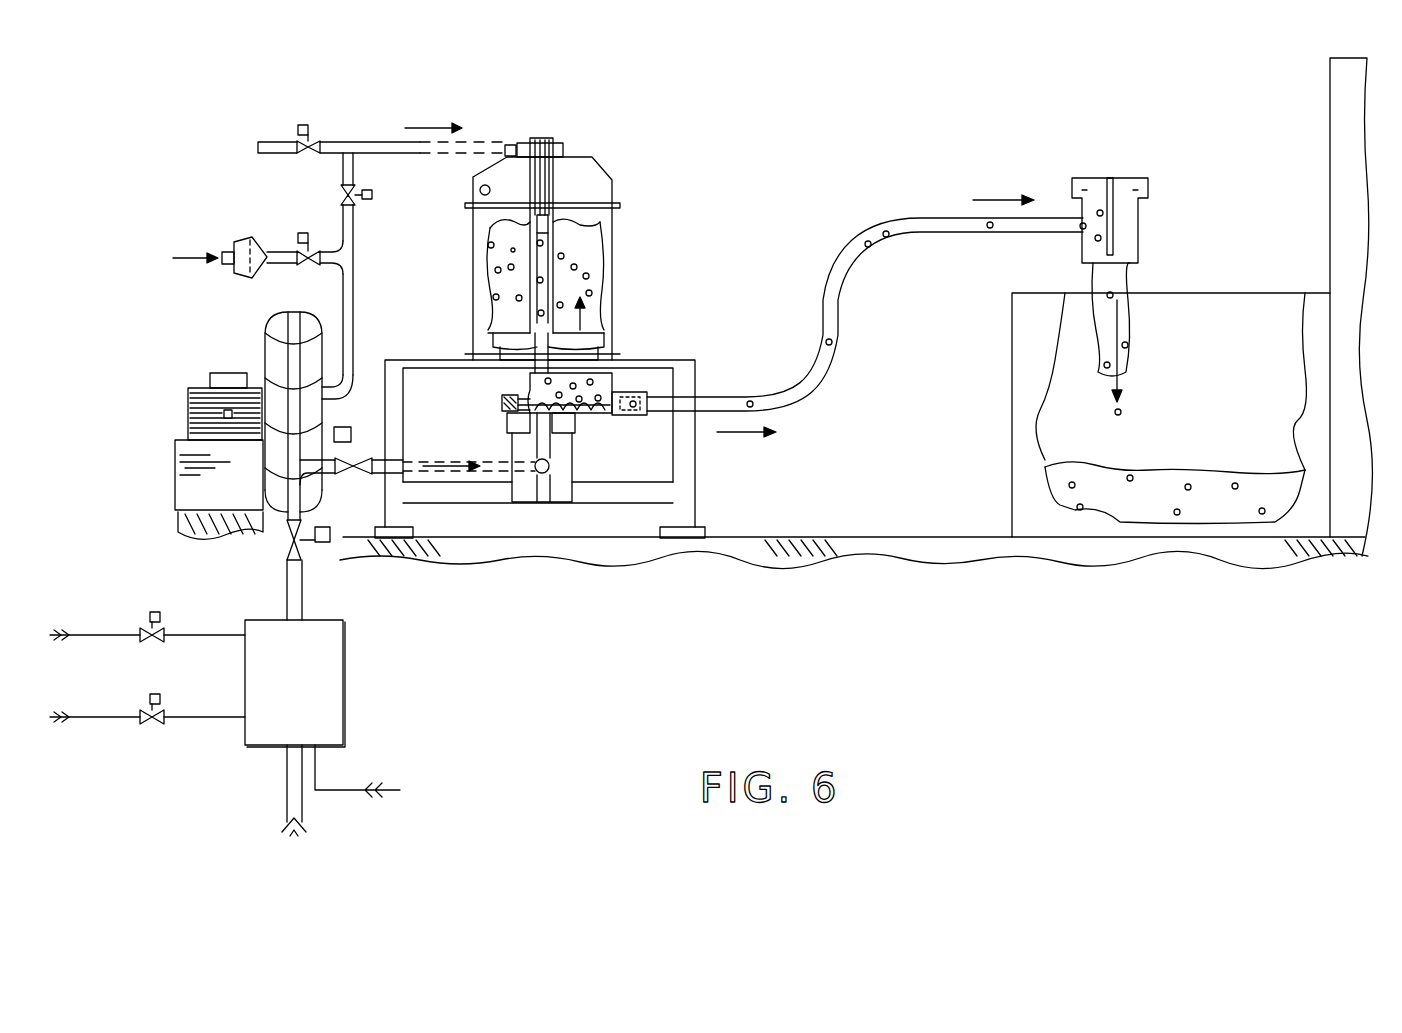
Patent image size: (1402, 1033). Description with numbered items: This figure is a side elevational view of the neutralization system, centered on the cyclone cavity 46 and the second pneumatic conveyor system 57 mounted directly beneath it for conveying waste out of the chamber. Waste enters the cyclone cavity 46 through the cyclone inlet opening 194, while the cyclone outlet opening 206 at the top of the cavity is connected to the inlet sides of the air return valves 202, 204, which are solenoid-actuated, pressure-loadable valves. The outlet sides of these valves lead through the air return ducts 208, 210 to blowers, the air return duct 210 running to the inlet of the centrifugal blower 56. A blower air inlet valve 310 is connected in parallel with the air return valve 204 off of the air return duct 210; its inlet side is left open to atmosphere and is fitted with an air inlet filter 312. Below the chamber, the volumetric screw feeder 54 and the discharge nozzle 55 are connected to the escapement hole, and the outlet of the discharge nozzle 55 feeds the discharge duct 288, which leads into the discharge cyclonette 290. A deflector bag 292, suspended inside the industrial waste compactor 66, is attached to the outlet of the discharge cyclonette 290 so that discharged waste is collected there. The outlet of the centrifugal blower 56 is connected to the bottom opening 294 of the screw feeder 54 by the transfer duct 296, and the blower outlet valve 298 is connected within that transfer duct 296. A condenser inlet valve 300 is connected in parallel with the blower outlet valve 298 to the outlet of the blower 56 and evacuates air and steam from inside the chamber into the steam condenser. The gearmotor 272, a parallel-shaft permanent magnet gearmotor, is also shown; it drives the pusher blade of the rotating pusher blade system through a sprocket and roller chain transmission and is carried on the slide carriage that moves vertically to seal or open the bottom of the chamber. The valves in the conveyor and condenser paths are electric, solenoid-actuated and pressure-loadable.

The cyclone cavity 46 is at (590, 165).
The volumetric screw feeder 54 is at (598, 415).
The discharge nozzle 55 is at (652, 378).
The centrifugal blower 56 is at (267, 330).
The second pneumatic conveyor system 57 is at (612, 370).
The industrial waste compactor 66 is at (1013, 400).
The cyclone inlet opening 194 is at (480, 190).
The air return valve 202 is at (306, 126).
The air return valve 204 is at (366, 189).
The cyclone outlet opening 206 is at (518, 143).
The air return duct 208 is at (277, 147).
The air return duct 210 is at (355, 283).
The gearmotor 272 is at (528, 502).
The discharge duct 288 is at (928, 222).
The discharge cyclonette 290 is at (1098, 192).
The deflector bag 292 is at (1135, 278).
The bottom opening 294 is at (548, 460).
The transfer duct 296 is at (482, 455).
The blower outlet valve 298 is at (345, 428).
The condenser inlet valve 300 is at (325, 545).
The blower air inlet valve 310 is at (298, 232).
The air inlet filter 312 is at (240, 240).